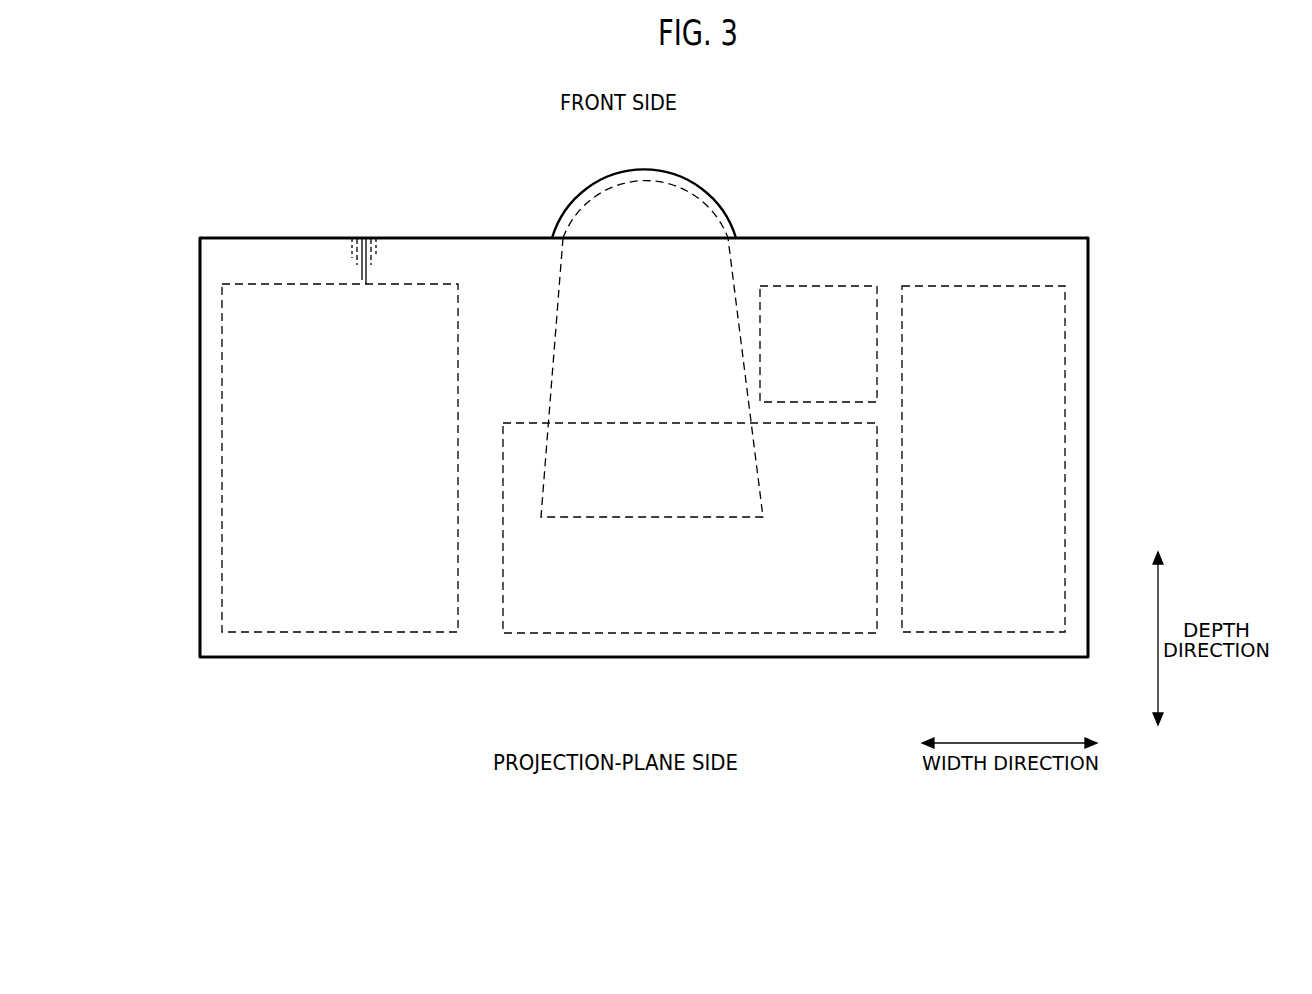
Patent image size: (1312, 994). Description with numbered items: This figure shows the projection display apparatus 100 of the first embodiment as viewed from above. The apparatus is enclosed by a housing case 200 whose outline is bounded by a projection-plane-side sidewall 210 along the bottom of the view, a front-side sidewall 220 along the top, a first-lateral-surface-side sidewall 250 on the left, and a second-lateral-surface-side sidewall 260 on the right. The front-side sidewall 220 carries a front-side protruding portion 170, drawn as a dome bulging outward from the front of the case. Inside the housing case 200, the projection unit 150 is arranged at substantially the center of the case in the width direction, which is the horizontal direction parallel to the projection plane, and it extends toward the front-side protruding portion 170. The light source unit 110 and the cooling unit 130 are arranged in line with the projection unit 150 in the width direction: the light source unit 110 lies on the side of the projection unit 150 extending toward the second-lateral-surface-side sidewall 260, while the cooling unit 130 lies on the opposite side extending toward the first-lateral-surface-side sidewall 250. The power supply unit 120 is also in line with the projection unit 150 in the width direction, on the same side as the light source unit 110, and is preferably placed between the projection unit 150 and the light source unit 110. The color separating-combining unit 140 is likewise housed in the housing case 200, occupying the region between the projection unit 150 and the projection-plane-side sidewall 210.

The projection display apparatus 100 is at (1038, 151).
The light source unit 110 is at (978, 632).
The power supply unit 120 is at (825, 286).
The cooling unit 130 is at (333, 632).
The color separating-combining unit 140 is at (707, 633).
The projection unit 150 is at (554, 333).
The front-side protruding portion 170 is at (678, 179).
The housing case 200 is at (1017, 238).
The projection-plane-side sidewall 210 is at (513, 658).
The front-side sidewall 220 is at (358, 238).
The first-lateral-surface-side sidewall 250 is at (199, 470).
The second-lateral-surface-side sidewall 260 is at (1088, 470).